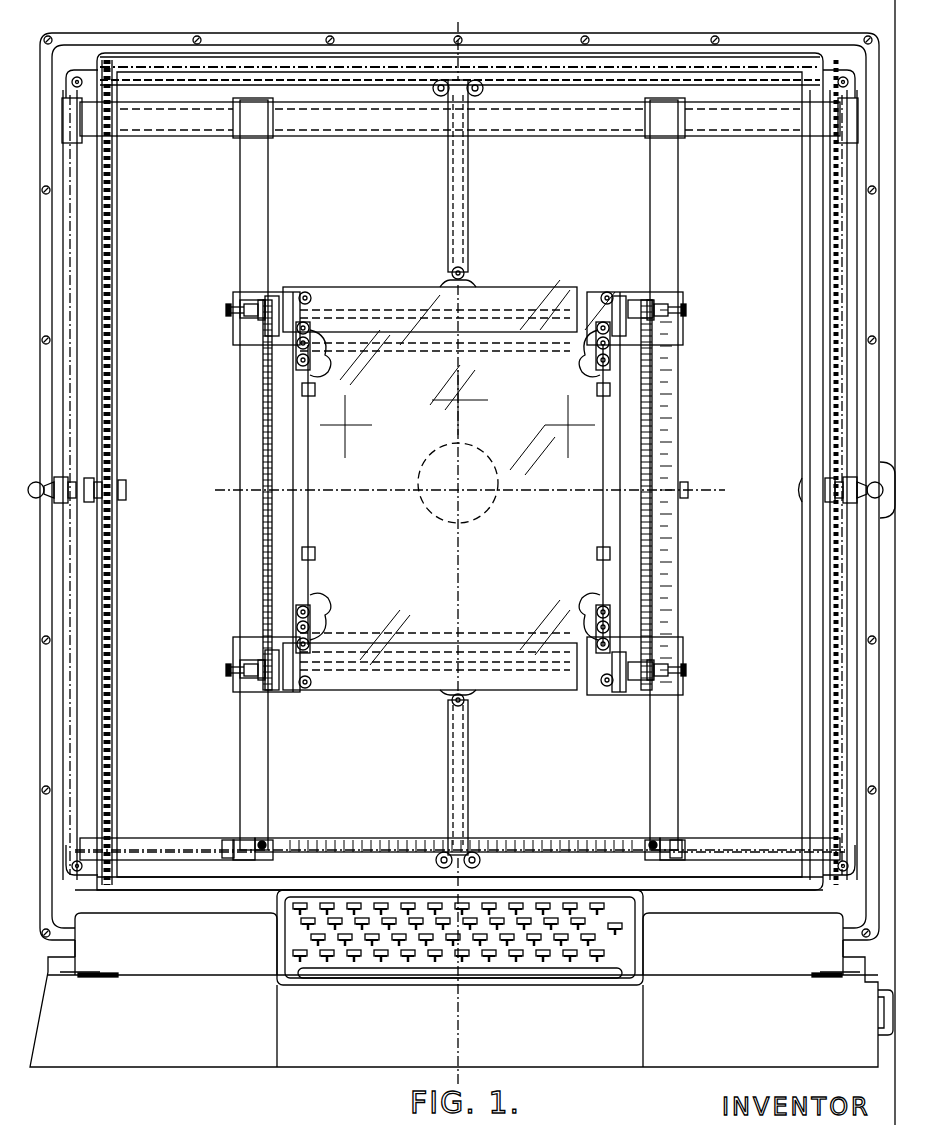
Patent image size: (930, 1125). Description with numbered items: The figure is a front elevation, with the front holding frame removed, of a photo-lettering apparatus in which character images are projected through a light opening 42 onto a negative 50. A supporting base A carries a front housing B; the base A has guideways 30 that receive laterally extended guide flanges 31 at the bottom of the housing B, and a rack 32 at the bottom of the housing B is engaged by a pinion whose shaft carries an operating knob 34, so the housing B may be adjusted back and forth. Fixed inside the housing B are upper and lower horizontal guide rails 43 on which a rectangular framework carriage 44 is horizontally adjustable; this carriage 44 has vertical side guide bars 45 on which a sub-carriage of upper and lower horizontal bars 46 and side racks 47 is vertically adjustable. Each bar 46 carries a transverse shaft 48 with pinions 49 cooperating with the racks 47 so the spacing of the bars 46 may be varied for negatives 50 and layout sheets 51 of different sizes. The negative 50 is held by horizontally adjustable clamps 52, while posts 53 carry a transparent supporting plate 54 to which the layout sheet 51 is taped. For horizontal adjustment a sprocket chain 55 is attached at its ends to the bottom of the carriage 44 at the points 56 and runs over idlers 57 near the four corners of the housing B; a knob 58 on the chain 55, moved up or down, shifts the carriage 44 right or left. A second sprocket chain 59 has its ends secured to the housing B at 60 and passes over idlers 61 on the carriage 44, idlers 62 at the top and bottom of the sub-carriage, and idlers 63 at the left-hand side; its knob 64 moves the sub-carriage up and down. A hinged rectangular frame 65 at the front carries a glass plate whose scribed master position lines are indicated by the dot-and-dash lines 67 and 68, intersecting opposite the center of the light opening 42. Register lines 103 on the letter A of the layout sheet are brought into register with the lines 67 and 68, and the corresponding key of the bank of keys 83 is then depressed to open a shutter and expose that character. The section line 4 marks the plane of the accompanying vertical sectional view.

The section line 4— 4 is at (470, 551).
The guideways 30 is at (58, 982).
The guide flanges 31 is at (72, 970).
The rack 32 is at (100, 978).
The operating knob 34 is at (880, 1028).
The light opening 42 is at (462, 450).
The guide rails 43 is at (768, 128).
The framework carriage 44 is at (612, 136).
The side guide bars 45 is at (250, 212).
The horizontal bars 46 is at (262, 330).
The side racks 47 is at (263, 452).
The shaft 48 is at (580, 308).
The pinions 49 is at (635, 300).
The negative 50 is at (300, 370).
The layout sheet 51 is at (302, 553).
The clamps 52 is at (298, 344).
The posts 53 is at (310, 294).
The transparent supporting plate 54 is at (360, 690).
The sprocket chain 55 is at (165, 848).
The chain attachment points 56 is at (226, 846).
The idlers 57 is at (823, 72).
The handle or knob 58 is at (845, 492).
The sprocket chain 59 is at (450, 212).
The chain end attachment points 60 is at (800, 70).
The idlers 61 is at (432, 90).
The idlers 62 is at (465, 272).
The idlers 63 is at (77, 80).
The handle or operating knob 64 is at (78, 484).
The hinged rectangular frame 65 is at (113, 664).
The master position line 67 is at (690, 490).
The master position line 68 is at (460, 475).
The bank of keys 83 is at (612, 937).
The register lines 103 is at (343, 402).
The supporting base A is at (240, 1067).
The front housing B is at (165, 915).